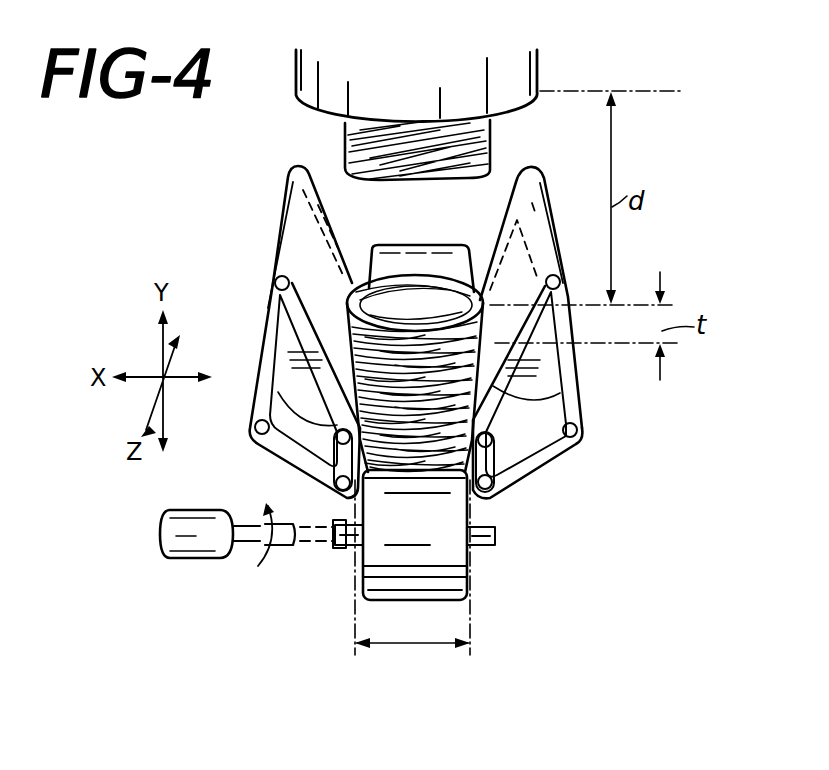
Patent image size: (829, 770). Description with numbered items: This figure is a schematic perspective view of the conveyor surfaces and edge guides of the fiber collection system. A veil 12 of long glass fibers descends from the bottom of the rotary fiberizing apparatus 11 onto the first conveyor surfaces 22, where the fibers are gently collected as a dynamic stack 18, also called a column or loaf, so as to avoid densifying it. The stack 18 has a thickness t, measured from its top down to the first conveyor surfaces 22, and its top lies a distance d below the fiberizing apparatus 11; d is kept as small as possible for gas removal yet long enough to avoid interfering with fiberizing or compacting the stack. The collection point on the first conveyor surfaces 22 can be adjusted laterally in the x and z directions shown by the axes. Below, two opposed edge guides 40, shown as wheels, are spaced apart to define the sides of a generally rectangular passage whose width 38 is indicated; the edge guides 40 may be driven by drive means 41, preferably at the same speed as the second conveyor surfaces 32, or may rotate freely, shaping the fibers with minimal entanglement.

The rotary fiberizing apparatus 11 is at (542, 70).
The veil 12 is at (333, 146).
The dynamic stack 18 is at (447, 350).
The first conveyor surfaces 22 is at (318, 268).
The second conveyor surfaces 32 is at (333, 468).
The width 38 is at (410, 646).
The edge guides 40 is at (432, 258).
The drive means 41 is at (197, 536).